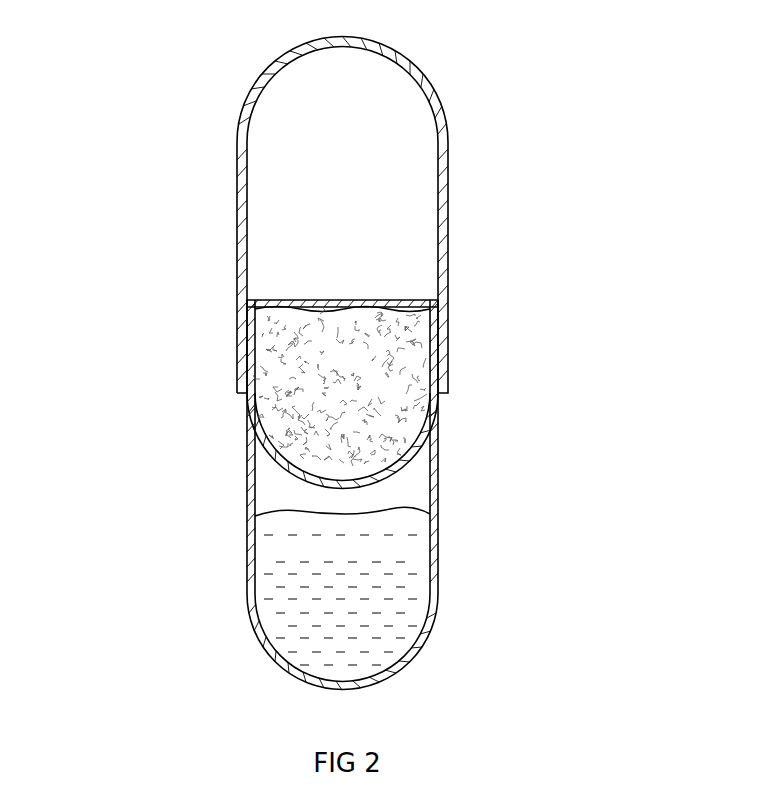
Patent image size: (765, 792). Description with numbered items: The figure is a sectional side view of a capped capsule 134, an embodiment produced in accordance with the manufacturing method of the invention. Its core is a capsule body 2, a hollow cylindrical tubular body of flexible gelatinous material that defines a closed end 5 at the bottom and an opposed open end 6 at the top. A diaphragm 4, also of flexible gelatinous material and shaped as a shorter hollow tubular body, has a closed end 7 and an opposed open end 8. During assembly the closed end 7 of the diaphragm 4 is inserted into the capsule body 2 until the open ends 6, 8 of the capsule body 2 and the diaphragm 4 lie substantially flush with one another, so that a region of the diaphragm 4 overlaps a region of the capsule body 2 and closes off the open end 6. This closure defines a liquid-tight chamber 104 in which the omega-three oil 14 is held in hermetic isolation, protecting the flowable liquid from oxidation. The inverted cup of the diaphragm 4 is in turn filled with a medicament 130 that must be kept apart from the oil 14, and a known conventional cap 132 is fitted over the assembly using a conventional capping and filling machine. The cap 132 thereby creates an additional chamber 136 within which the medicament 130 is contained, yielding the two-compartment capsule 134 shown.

The capsule 134 is at (176, 205).
The cap 132 is at (432, 94).
The additional chamber 136 is at (405, 212).
The capsule body 2 is at (443, 462).
The chamber 104 is at (408, 490).
The closed end 5 is at (350, 691).
The Omega-3 oil 14 is at (405, 613).
The open end 6 is at (342, 281).
The open end 8 is at (336, 300).
The diaphragm 4 is at (268, 452).
The closed end 7 is at (300, 478).
The medicament 130 is at (413, 344).